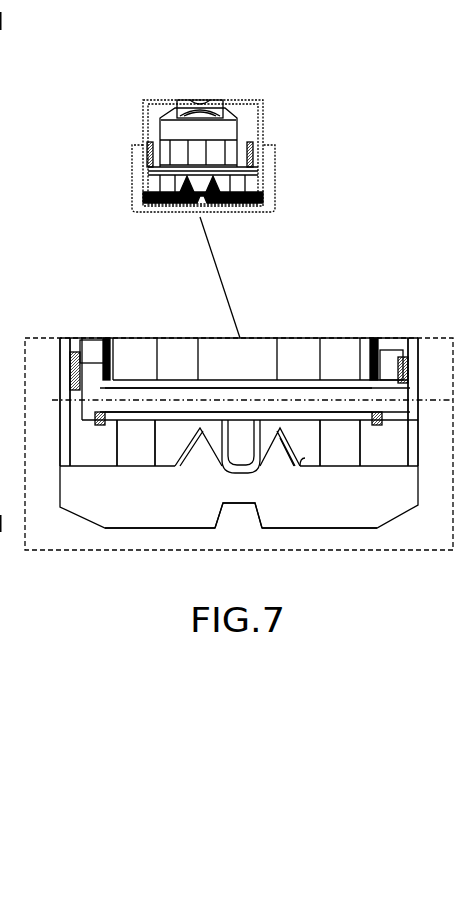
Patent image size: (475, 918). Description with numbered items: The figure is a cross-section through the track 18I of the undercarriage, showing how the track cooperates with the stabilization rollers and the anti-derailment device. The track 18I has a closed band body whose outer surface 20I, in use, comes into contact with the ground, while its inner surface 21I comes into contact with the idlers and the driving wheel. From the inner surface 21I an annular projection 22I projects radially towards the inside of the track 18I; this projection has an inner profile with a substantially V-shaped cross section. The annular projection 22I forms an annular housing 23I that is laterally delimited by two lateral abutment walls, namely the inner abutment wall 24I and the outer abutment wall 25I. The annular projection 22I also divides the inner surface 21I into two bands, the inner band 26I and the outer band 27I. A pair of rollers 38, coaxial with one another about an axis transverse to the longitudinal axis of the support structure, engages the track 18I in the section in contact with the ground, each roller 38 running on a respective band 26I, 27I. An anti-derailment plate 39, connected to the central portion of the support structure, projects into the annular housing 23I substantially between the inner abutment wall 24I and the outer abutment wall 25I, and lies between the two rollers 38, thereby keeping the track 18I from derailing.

The track 18I is at (398, 507).
The outer surface 20I is at (308, 535).
The inner surface 21I is at (289, 438).
The annular projection 22I is at (304, 450).
The annular housing 23I is at (220, 440).
The inner abutment wall 24I is at (200, 428).
The outer abutment wall 25I is at (241, 470).
The inner band 26I is at (92, 450).
The outer band 27I is at (378, 457).
The rollers 38 is at (138, 462).
The anti-derailment plate 39 is at (245, 490).